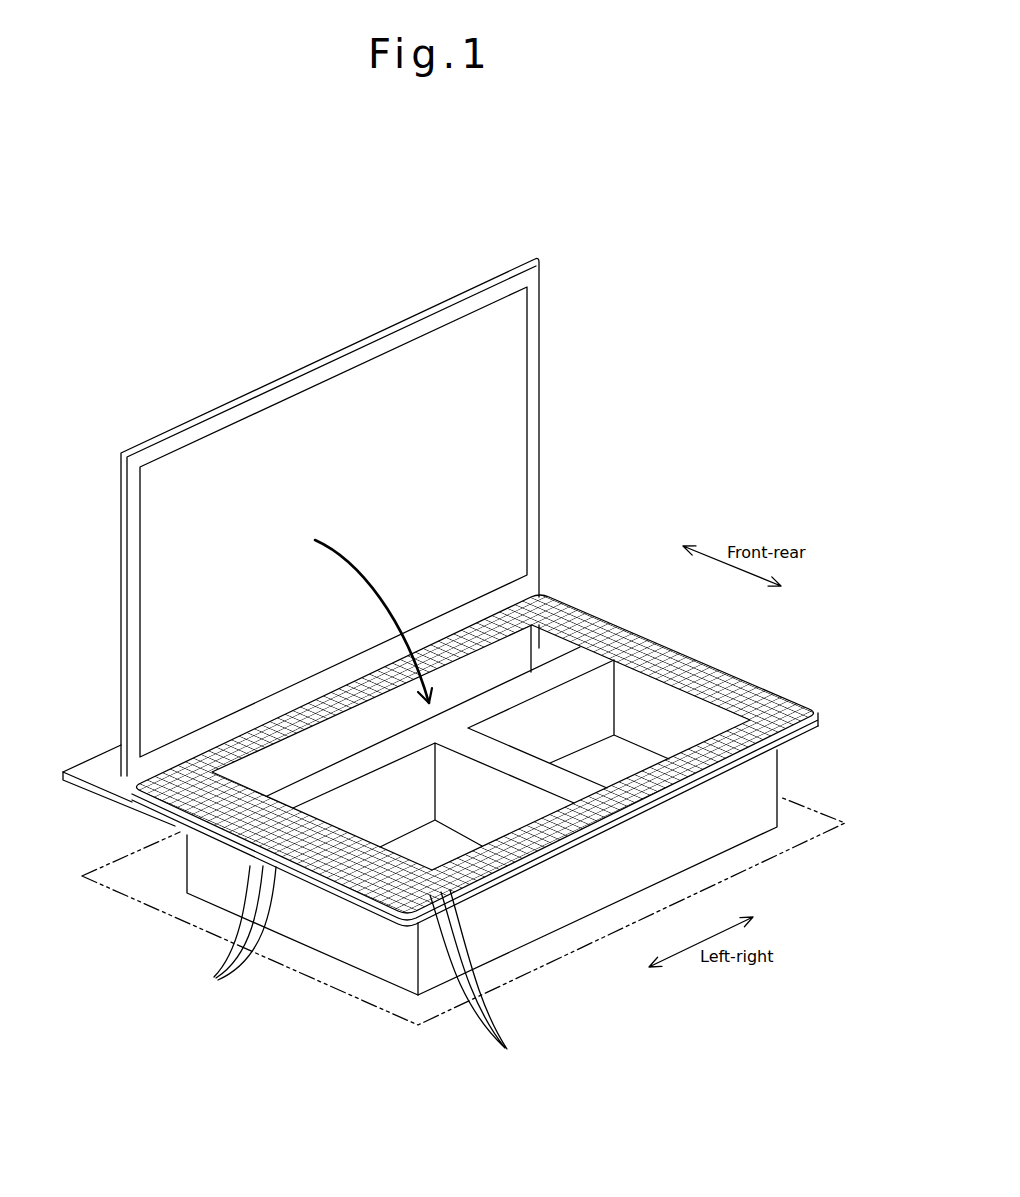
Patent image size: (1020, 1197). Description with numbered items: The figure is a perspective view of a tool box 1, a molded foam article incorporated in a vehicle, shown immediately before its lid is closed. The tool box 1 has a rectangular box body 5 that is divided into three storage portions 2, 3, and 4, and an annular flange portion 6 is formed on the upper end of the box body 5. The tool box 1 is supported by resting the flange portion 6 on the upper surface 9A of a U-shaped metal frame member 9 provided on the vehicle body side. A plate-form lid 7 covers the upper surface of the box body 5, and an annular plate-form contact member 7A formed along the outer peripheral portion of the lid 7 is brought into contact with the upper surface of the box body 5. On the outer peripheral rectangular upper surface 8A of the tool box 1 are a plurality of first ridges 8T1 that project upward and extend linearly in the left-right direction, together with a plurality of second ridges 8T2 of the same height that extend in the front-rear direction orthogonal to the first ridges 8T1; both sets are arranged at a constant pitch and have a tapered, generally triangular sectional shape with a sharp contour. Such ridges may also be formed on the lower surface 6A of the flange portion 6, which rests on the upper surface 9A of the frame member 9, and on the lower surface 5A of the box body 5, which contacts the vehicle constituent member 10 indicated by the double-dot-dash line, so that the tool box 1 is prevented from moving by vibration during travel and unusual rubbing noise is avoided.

The tool box 1 is at (624, 522).
The storage portion 2 is at (540, 640).
The storage portion 3 is at (427, 848).
The storage portion 4 is at (681, 716).
The box body 5 is at (722, 818).
The lower surface of box body 5A is at (584, 920).
The flange portion 6 is at (784, 692).
The lower surface of flange portion 6A is at (347, 900).
The lid 7 is at (458, 425).
The contact member 7A is at (518, 277).
The upper surface 8A is at (660, 640).
The first ridges 8T1 is at (489, 977).
The second ridges 8T2 is at (222, 929).
The frame member 9 is at (64, 776).
The upper surface of frame member 9A is at (95, 736).
The vehicle constituent member 10 is at (153, 915).